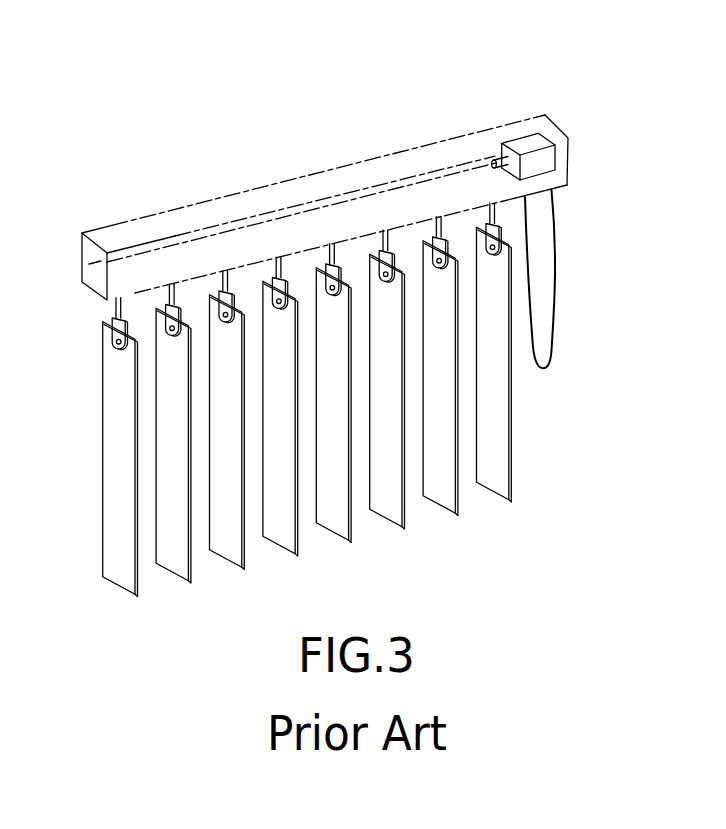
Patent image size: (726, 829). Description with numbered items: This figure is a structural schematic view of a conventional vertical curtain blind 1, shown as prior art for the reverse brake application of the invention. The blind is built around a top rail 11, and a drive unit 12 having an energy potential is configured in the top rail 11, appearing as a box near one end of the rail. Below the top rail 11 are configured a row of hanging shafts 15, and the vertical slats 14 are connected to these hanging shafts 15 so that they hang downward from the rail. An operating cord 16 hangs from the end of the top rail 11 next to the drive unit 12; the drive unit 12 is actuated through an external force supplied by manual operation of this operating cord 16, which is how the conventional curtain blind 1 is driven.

The curtain blind 1 is at (288, 141).
The top rail 11 is at (383, 173).
The drive unit 12 is at (538, 162).
The vertical slats 14 is at (495, 433).
The hanging shafts 15 is at (499, 224).
The operating cord 16 is at (557, 318).